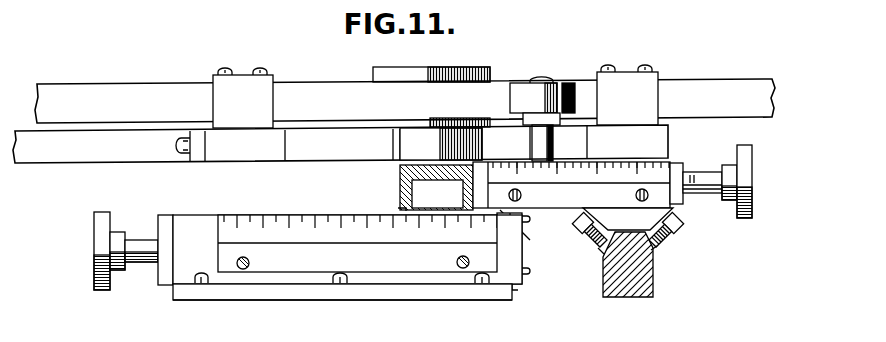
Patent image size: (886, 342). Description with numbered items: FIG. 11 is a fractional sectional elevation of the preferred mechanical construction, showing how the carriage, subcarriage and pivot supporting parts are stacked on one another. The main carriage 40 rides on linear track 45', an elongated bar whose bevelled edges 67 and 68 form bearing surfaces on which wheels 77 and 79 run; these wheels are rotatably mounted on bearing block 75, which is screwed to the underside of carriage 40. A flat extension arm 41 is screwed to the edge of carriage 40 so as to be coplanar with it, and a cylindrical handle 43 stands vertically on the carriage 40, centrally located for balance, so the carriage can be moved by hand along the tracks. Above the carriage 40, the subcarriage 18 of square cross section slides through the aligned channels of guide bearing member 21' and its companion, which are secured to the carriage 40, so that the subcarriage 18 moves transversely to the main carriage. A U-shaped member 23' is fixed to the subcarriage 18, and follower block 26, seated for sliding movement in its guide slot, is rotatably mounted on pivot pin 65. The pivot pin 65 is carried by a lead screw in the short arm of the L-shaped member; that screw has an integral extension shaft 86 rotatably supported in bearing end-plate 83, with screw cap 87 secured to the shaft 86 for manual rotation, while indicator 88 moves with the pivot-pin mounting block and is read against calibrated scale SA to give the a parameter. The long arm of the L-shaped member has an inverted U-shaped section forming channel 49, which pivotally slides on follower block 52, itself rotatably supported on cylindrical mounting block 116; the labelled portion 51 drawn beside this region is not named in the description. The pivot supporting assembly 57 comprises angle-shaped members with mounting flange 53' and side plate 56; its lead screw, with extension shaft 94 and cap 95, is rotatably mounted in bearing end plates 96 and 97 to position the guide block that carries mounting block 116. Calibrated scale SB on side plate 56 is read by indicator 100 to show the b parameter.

The subcarriage 18 is at (153, 91).
The cylindrical handle 43 is at (373, 70).
The guide bearing member 21' is at (649, 86).
The U-shaped member 23' is at (513, 104).
The pivot pin 65 is at (538, 78).
The follower block 26 is at (557, 84).
The indicator 88 is at (582, 160).
The flat extension arm 41 is at (105, 159).
The main carriage 40 is at (313, 153).
The rack section 51 is at (493, 139).
The channel 49 is at (412, 193).
The follower block 52 is at (437, 194).
The mounting block 116 is at (398, 208).
The calibrated scale SA is at (571, 185).
The bearing end-plate 83 is at (682, 199).
The extension shaft 86 is at (706, 177).
The screw cap 87 is at (745, 180).
The bearing block 75 is at (673, 212).
The linear track 45' is at (650, 270).
The bearing wheel 77 is at (581, 220).
The bearing wheel 79 is at (680, 231).
The bevelled edge 67 is at (597, 253).
The bevelled edge 68 is at (658, 251).
The indicator 100 is at (530, 247).
The cap 95 is at (93, 237).
The extension shaft 94 is at (143, 247).
The bearing end plate 96 is at (163, 270).
The side plate 56 is at (280, 279).
The calibrated scale SB is at (357, 243).
The bearing end plate 97 is at (518, 285).
The mounting flange 53' is at (342, 305).
The pivot supporting assembly 57 is at (230, 302).